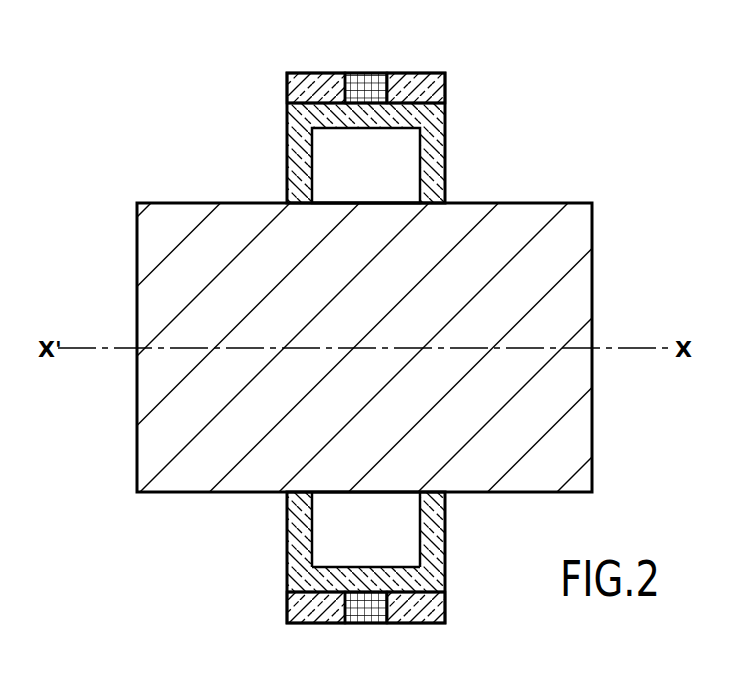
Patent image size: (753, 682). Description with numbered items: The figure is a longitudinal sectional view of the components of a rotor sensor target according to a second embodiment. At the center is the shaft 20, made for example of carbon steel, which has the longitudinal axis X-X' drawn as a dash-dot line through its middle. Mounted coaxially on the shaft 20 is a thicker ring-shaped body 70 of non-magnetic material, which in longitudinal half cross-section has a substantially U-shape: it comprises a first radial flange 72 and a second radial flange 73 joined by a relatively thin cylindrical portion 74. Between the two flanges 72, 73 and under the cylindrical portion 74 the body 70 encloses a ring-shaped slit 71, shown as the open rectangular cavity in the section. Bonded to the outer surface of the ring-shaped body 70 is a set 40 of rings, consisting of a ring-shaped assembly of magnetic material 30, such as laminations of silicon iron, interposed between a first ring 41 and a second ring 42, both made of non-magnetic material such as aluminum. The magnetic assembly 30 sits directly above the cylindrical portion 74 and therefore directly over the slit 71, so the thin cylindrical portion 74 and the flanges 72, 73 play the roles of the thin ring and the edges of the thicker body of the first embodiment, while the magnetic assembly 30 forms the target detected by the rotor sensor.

The shaft 20 is at (144, 249).
The ring-shaped assembly of magnetic material 30 is at (364, 89).
The set of rings 40 is at (446, 70).
The first ring 41 is at (311, 84).
The second ring 42 is at (412, 84).
The thicker ring-shaped body 70 is at (284, 150).
The ring-shaped slit 71 is at (313, 178).
The first radial flange 72 is at (296, 531).
The second radial flange 73 is at (436, 531).
The cylindrical portion 74 is at (368, 579).